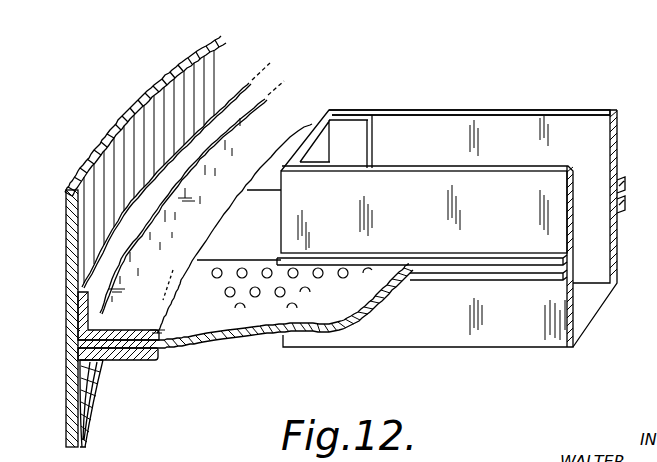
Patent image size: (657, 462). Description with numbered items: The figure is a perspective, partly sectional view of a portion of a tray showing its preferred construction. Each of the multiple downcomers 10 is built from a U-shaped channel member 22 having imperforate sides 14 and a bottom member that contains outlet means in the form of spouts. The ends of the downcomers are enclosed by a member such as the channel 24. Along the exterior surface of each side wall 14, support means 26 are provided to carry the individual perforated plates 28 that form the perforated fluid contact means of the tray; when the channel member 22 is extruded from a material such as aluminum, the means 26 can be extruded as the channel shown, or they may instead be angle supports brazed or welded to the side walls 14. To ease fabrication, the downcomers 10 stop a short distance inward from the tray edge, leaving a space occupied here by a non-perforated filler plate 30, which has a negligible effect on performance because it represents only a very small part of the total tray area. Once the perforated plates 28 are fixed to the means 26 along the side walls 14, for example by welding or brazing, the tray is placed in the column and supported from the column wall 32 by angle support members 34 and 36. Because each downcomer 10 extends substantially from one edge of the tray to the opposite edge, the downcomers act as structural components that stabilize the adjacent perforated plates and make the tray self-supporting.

The downcomer 10 is at (466, 209).
The side wall 14 is at (598, 131).
The channel member 22 is at (438, 110).
The channel 24 is at (323, 120).
The support means 26 is at (450, 278).
The perforated plate 28 is at (222, 341).
The non-perforated filler plate 30 is at (268, 229).
The column wall 32 is at (66, 242).
The angle support member 34 is at (147, 330).
The angle support member 36 is at (137, 360).